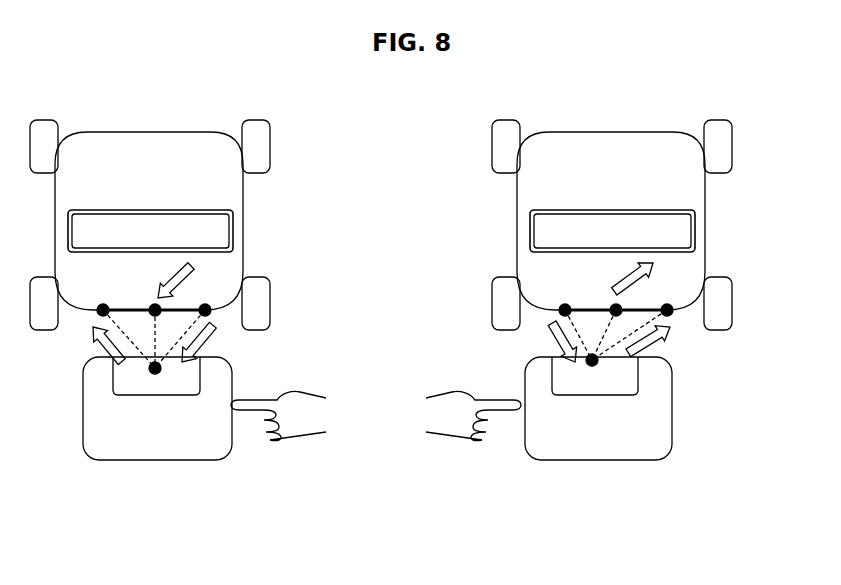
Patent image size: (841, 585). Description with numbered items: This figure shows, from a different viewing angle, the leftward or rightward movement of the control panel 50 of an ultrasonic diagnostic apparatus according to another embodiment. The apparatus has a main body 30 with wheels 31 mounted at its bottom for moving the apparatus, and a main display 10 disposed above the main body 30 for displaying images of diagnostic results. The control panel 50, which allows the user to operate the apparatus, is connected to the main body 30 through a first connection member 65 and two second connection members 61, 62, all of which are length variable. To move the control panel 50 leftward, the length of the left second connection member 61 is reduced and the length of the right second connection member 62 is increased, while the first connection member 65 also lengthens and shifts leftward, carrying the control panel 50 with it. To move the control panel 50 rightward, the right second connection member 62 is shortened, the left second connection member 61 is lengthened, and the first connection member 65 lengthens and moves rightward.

The main display 10 is at (223, 235).
The main body 30 is at (165, 142).
The wheels 31 is at (262, 140).
The control panel 50 is at (220, 470).
The left second connection member 61 is at (110, 343).
The right second connection member 62 is at (213, 342).
The first connection member 65 is at (153, 338).